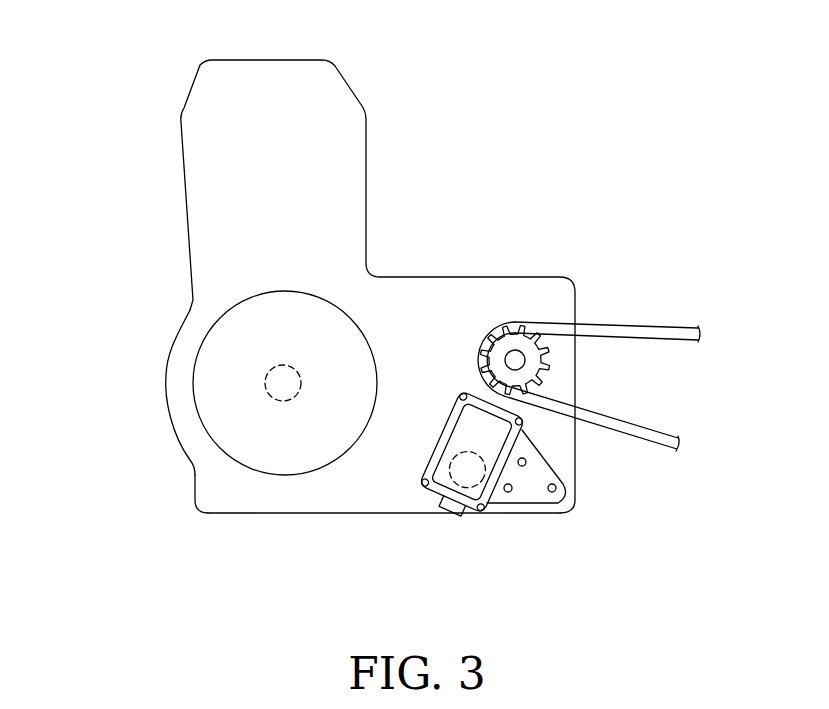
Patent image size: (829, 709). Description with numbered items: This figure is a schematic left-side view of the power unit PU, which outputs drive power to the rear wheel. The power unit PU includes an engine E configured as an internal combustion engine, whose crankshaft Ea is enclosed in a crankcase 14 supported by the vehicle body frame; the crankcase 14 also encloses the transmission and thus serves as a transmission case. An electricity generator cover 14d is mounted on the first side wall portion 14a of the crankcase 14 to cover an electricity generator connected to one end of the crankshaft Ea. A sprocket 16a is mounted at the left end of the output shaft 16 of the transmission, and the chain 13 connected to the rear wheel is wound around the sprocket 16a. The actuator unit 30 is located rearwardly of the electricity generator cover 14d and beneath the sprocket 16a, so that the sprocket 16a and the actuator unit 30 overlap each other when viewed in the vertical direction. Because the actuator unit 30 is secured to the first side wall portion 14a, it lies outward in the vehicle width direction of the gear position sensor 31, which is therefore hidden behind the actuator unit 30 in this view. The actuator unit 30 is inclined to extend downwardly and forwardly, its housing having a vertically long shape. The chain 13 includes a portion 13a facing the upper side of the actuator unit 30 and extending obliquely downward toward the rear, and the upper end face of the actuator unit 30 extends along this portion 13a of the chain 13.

The power unit PU is at (393, 123).
The engine E is at (183, 177).
The crankshaft Ea is at (283, 383).
The crankcase 14 is at (420, 295).
The first side wall portion 14a is at (328, 503).
The electricity generator cover 14d is at (207, 368).
The output shaft 16 is at (515, 350).
The sprocket 16a is at (533, 343).
The chain 13 is at (647, 438).
The portion of the chain 13a is at (518, 393).
The actuator unit 30 is at (422, 493).
The gear position sensor 31 is at (468, 485).